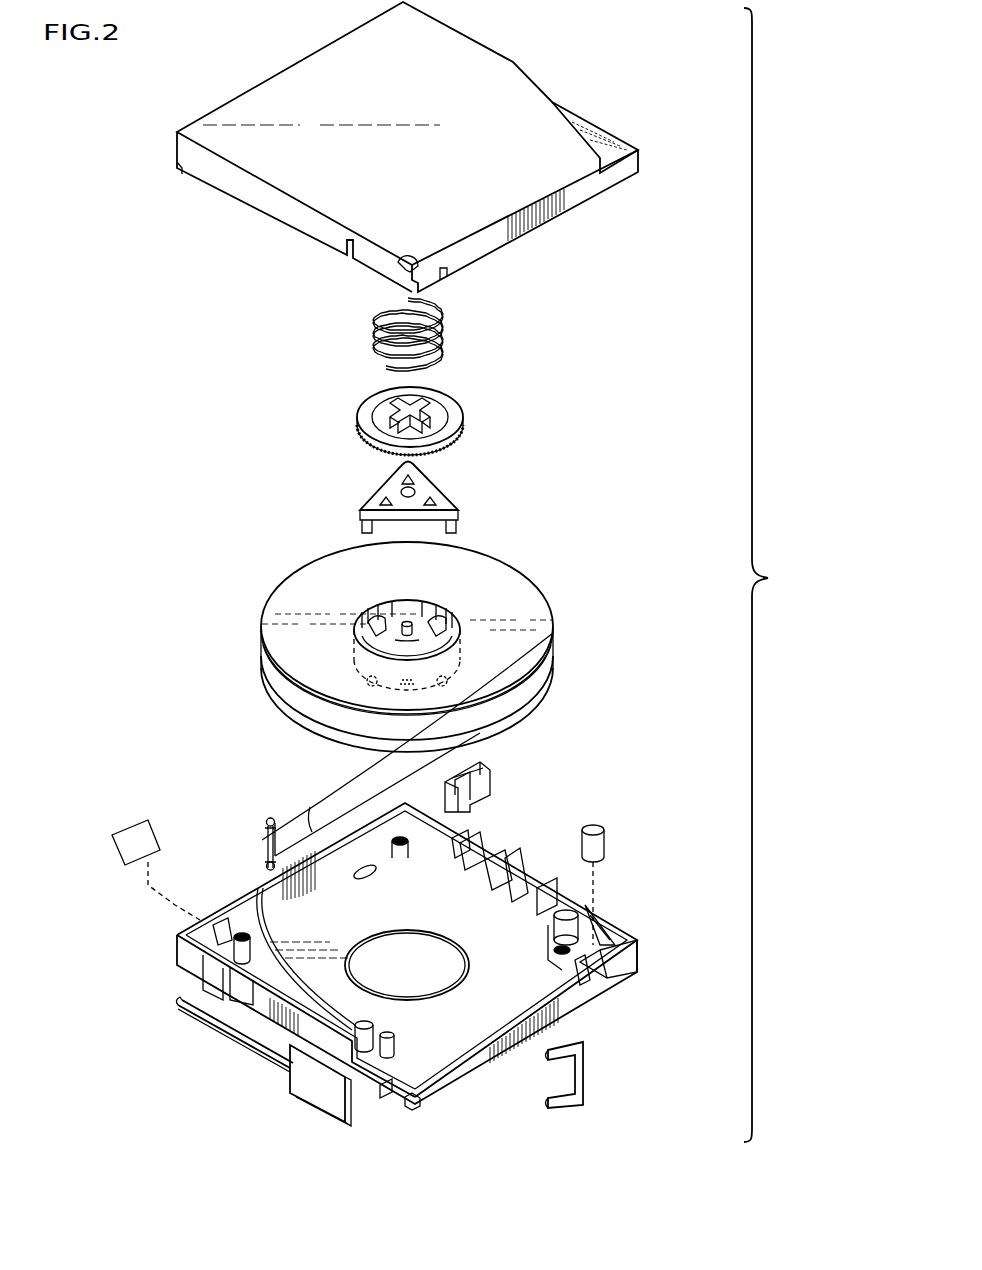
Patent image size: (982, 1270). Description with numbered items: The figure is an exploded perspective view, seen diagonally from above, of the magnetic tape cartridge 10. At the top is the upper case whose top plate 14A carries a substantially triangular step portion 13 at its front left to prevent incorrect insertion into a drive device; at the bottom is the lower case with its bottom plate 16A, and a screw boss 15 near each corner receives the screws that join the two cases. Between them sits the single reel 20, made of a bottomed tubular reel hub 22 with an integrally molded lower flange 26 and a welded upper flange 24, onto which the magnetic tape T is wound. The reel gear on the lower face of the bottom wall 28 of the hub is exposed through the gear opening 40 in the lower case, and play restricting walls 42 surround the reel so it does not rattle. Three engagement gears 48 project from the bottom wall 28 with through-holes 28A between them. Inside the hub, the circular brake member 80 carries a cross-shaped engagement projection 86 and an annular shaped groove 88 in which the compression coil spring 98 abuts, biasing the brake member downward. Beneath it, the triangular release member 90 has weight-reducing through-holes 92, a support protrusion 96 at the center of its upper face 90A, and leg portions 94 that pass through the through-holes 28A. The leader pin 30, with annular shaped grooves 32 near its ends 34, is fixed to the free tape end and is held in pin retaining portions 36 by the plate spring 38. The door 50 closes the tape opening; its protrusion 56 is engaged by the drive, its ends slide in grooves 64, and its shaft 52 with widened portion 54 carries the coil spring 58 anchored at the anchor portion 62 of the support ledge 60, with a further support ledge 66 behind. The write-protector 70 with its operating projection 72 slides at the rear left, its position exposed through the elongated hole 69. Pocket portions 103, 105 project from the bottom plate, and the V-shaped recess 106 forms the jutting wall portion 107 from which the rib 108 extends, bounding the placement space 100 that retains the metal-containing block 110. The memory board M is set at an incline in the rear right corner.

The magnetic tape cartridge 10 is at (620, 62).
The step portion 13 is at (605, 160).
The top plate 14A is at (495, 82).
The screw boss 15 is at (200, 938).
The bottom plate 16A is at (512, 878).
The reel 20 is at (417, 628).
The reel hub 22 is at (430, 605).
The upper flange 24 is at (515, 598).
The lower flange 26 is at (553, 683).
The bottom wall 28 is at (395, 648).
The through-holes 28A is at (413, 622).
The leader pin 30 is at (236, 837).
The annular shaped grooves 32 is at (265, 828).
The ends 34 is at (267, 820).
The pin retaining portions 36 is at (400, 268).
The plate spring 38 is at (580, 1080).
The gear opening 40 is at (473, 921).
The play restricting walls 42 is at (415, 870).
The engagement gears 48 is at (378, 612).
The door 50 is at (271, 1068).
The shaft 52 is at (232, 1046).
The widened portion 54 is at (176, 1008).
The protrusion 56 is at (340, 1115).
The coil spring 58 is at (195, 1022).
The support ledge 60 is at (262, 970).
The anchor portion 62 is at (265, 950).
The grooves 64 is at (383, 1090).
The support ledge 66 is at (203, 975).
The elongated hole 69 is at (365, 880).
The write-protector 70 is at (495, 780).
The operating projection 72 is at (480, 770).
The brake member 80 is at (416, 405).
The engagement projection 86 is at (430, 396).
The annular shaped groove 88 is at (378, 410).
The release member 90 is at (406, 492).
The upper face 90A is at (393, 487).
The through-holes 92 is at (425, 478).
The leg portions 94 is at (360, 530).
The support protrusion 96 is at (400, 492).
The compression coil spring 98 is at (440, 310).
The placement space 100 is at (534, 943).
The pocket portion 103 is at (398, 1045).
The pocket portion 105 is at (548, 925).
The recess 106 is at (625, 968).
The jutting wall portion 107 is at (615, 928).
The rib 108 is at (600, 922).
The metal-containing block 110 is at (600, 843).
The memory board M is at (128, 838).
The magnetic tape T is at (300, 826).